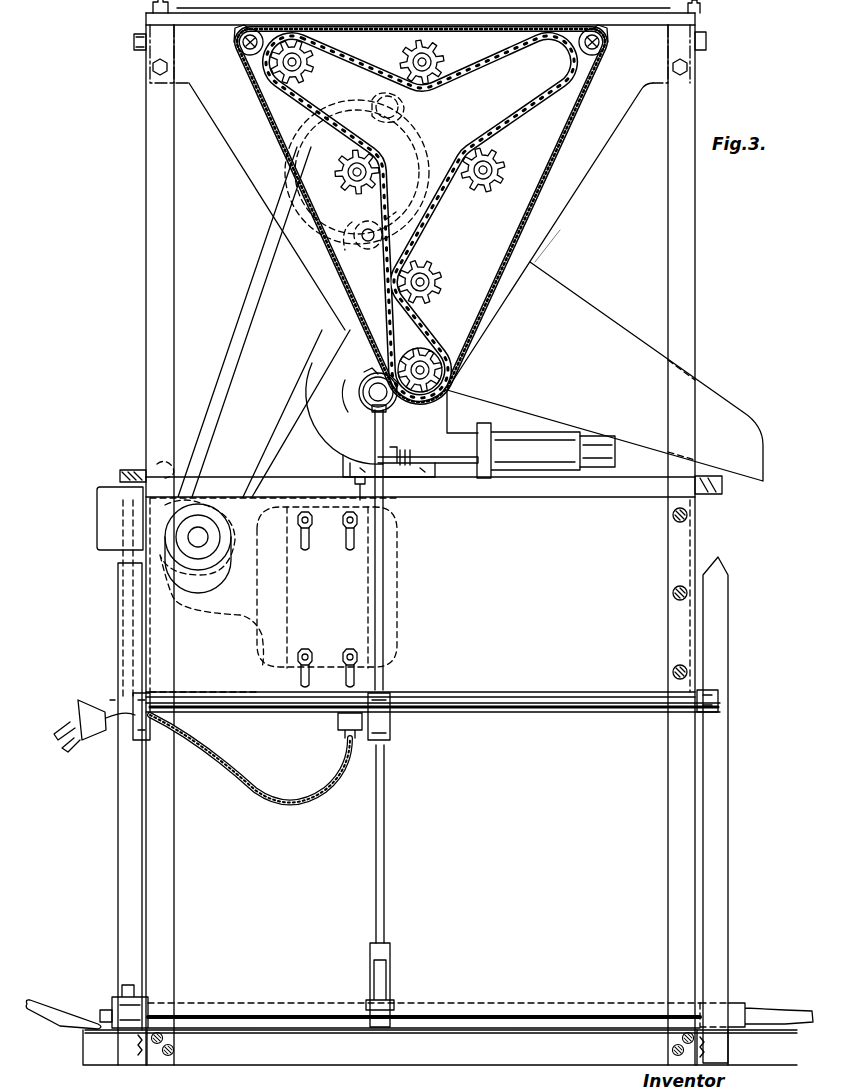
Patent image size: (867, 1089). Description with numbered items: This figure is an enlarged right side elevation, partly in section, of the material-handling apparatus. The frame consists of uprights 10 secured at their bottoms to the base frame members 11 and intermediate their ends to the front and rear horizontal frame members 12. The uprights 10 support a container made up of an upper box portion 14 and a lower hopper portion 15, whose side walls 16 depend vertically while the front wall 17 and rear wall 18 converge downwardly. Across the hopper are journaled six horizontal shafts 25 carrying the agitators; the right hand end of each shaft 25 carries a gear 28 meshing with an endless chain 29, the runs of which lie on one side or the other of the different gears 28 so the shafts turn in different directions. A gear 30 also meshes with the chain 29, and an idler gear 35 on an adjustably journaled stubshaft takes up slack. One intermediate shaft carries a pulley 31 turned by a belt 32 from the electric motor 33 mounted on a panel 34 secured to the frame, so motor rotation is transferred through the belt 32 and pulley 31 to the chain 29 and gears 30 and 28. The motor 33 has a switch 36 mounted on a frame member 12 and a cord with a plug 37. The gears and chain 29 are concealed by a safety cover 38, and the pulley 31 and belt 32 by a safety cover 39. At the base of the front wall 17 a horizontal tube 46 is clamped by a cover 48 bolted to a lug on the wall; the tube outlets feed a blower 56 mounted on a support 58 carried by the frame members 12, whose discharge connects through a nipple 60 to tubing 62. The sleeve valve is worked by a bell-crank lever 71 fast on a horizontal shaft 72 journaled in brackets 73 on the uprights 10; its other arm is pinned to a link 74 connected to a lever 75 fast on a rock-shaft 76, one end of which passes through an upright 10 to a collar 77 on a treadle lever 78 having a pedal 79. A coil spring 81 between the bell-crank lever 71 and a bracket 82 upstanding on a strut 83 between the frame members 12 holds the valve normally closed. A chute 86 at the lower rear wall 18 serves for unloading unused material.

The uprights 10 is at (160, 386).
The frame members 11 is at (118, 1062).
The horizontal frame members 12 is at (122, 478).
The box portion 14 is at (148, 12).
The hopper portion 15 is at (576, 238).
The side walls 16 is at (583, 176).
The front wall 17 is at (243, 167).
The rear wall 18 is at (574, 206).
The horizontal shafts 25 is at (445, 55).
The gear 28 is at (399, 51).
The endless chain 29 is at (508, 104).
The gear 30 is at (422, 336).
The pulley 31 is at (400, 112).
The belt 32 is at (241, 352).
The electric motor 33 is at (410, 582).
The panel 34 is at (688, 554).
The idler gear 35 is at (395, 215).
The switch 36 is at (98, 530).
The plug 37 is at (92, 702).
The safety cover 38 is at (555, 143).
The safety cover 39 is at (243, 307).
The tube 46 is at (372, 362).
The cover 48 is at (362, 405).
The blower 56 is at (420, 428).
The support 58 is at (568, 500).
The nipple 60 is at (548, 430).
The tubing 62 is at (612, 460).
The bell-crank lever 71 is at (387, 545).
The horizontal shaft 72 is at (480, 712).
The brackets 73 is at (136, 740).
The link 74 is at (386, 815).
The lever 75 is at (388, 983).
The rock-shaft 76 is at (468, 1003).
The collar 77 is at (112, 1005).
The treadle lever 78 is at (98, 1007).
The pedal 79 is at (50, 1028).
The coil spring 81 is at (392, 480).
The bracket 82 is at (400, 455).
The strut 83 is at (515, 497).
The chute 86 is at (735, 425).